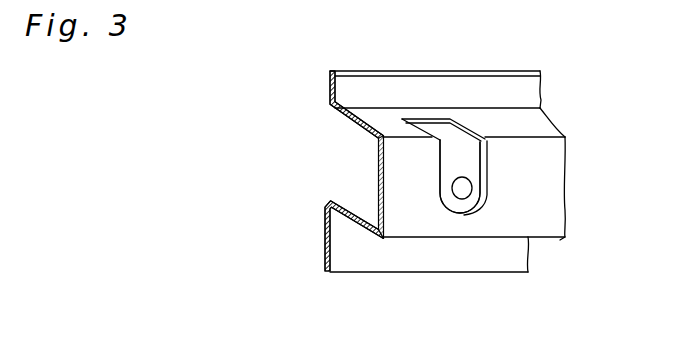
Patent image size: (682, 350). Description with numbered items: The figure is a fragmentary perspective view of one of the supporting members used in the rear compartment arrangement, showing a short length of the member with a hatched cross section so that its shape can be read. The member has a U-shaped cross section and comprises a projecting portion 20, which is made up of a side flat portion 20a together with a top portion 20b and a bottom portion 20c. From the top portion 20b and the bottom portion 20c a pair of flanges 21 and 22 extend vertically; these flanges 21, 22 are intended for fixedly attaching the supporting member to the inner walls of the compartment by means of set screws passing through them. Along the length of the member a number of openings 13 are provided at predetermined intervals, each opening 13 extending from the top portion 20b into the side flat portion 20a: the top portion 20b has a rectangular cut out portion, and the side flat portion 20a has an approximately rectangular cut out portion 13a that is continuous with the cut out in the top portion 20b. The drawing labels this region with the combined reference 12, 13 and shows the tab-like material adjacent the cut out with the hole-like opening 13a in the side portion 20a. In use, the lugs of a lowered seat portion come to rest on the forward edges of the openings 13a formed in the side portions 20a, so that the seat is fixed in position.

The mounting tab 12 is at (461, 121).
The opening 13 is at (461, 121).
The opening in the side portion 13a is at (472, 161).
The projecting portion 20 is at (365, 170).
The side flat portion 20a is at (432, 227).
The top portion 20b is at (373, 113).
The bottom portion 20c is at (360, 227).
The flange 21 is at (361, 88).
The flange 22 is at (377, 258).